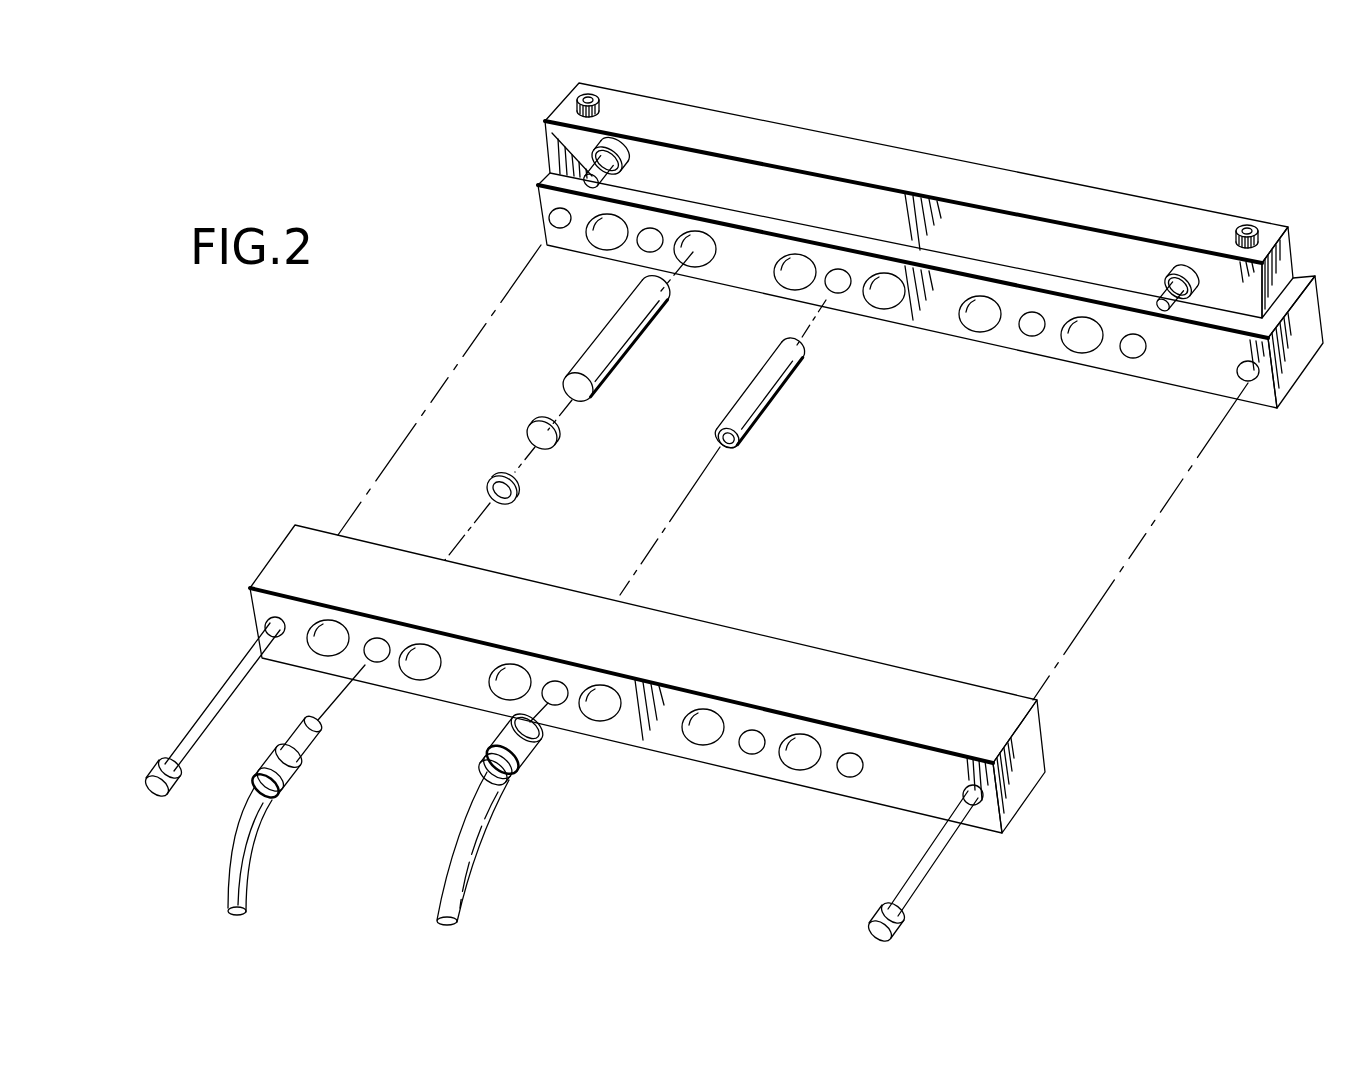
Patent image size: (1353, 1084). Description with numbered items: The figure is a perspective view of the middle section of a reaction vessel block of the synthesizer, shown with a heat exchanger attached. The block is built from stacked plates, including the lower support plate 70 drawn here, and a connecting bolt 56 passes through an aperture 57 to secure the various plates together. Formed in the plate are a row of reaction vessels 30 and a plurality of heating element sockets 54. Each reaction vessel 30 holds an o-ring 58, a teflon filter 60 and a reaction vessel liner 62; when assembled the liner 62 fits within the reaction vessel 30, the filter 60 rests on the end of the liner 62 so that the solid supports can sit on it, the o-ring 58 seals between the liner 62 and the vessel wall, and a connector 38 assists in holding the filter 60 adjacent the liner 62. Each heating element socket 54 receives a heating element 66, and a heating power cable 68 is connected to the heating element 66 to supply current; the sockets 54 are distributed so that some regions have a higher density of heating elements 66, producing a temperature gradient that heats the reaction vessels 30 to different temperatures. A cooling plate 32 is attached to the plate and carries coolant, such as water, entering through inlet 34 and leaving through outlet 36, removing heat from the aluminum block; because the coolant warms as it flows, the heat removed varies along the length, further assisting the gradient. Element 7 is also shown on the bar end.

The clamping bar 7 is at (1310, 353).
The reaction vessel 30 is at (680, 254).
The cooling plate 32 is at (1191, 223).
The inlet 34 is at (546, 142).
The outlet 36 is at (1195, 300).
The connector 38 is at (288, 772).
The heating element socket 54 is at (652, 230).
The connecting bolt 56 is at (192, 735).
The aperture 57 is at (548, 218).
The o-ring 58 is at (520, 495).
The teflon filter 60 is at (557, 442).
The reaction vessel liner 62 is at (622, 350).
The heating element 66 is at (767, 400).
The heating power cable 68 is at (467, 866).
The lower support plate 70 is at (1041, 750).